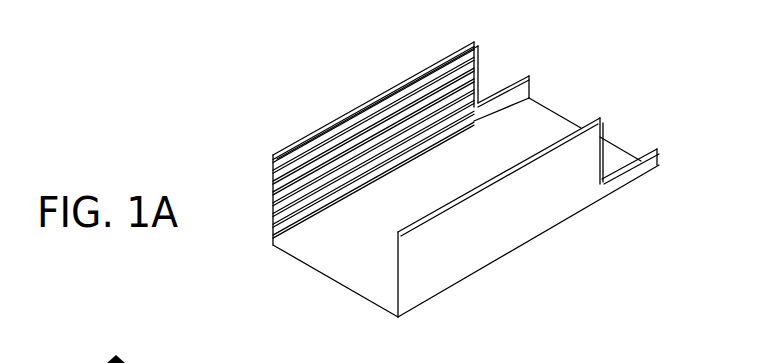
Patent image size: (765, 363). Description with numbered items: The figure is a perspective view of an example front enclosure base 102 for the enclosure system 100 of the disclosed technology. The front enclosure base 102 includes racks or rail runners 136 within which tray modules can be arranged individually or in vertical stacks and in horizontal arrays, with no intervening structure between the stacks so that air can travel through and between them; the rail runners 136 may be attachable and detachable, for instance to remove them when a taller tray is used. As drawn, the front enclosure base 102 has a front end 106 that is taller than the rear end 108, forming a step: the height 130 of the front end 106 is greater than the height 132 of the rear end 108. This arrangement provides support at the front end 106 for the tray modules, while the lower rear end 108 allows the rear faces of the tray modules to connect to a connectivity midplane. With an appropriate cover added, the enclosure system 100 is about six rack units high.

The enclosure system 100 is at (117, 55).
The front enclosure base 102 is at (508, 253).
The front end 106 is at (309, 306).
The rear end 108 is at (638, 107).
The height 130 is at (259, 156).
The height 132 is at (537, 72).
The rail runners 136 is at (477, 64).